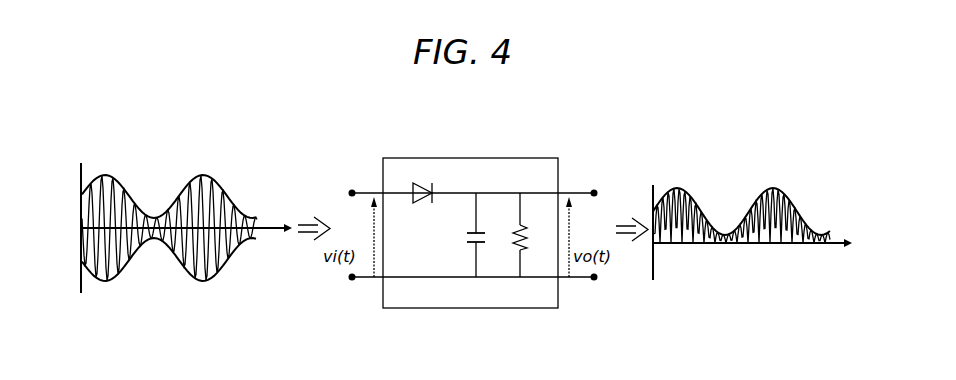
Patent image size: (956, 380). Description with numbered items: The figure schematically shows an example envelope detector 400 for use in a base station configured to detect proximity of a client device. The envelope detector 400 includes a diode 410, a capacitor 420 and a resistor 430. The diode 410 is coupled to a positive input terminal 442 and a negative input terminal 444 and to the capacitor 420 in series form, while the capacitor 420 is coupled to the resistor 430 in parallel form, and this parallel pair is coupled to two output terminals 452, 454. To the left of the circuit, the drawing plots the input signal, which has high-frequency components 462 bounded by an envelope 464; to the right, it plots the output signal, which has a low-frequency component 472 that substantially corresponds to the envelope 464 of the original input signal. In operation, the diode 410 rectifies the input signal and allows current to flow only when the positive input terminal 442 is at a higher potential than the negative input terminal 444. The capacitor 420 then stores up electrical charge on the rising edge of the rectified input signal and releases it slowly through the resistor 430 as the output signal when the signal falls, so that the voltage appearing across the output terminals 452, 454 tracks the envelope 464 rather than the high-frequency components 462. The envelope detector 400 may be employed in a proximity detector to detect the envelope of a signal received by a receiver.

The envelope detector 400 is at (523, 158).
The diode 410 is at (422, 183).
The capacitor 420 is at (471, 246).
The resistor 430 is at (523, 246).
The positive input terminal 442 is at (352, 190).
The negative input terminal 444 is at (351, 281).
The output terminal 452 is at (593, 190).
The output terminal 454 is at (596, 281).
The high-frequency components 462 is at (187, 198).
The envelope 464 is at (222, 190).
The low-frequency component 472 is at (688, 200).